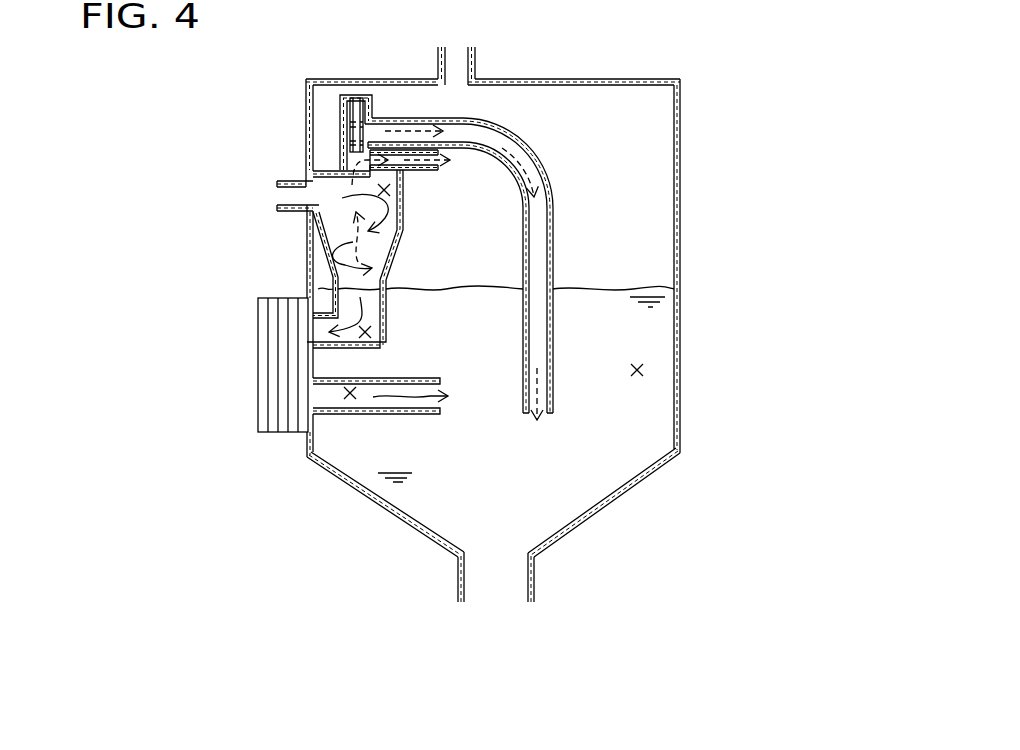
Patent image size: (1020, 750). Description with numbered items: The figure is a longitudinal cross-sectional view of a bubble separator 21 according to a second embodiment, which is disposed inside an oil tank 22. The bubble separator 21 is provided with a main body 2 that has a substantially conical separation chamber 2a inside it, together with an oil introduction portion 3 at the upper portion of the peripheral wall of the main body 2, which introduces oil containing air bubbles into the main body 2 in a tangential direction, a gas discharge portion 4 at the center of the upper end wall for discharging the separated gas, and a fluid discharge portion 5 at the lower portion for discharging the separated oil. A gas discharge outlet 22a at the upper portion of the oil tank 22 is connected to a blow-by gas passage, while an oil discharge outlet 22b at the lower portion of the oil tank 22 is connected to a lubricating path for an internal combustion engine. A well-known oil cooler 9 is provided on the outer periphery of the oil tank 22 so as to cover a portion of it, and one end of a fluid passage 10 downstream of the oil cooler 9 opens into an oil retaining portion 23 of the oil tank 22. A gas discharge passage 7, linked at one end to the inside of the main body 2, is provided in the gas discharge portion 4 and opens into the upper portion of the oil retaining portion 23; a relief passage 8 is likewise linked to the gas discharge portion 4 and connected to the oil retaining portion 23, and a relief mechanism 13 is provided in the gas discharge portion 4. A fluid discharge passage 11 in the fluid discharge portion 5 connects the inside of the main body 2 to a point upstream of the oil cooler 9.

The main body 2 is at (403, 182).
The separation chamber 2a is at (390, 192).
The oil introduction portion 3 is at (288, 184).
The gas discharge portion 4 is at (342, 148).
The fluid discharge portion 5 is at (389, 312).
The gas discharge passage 7 is at (404, 160).
The relief passage 8 is at (532, 249).
The oil cooler 9 is at (258, 352).
The fluid passage 10 is at (350, 400).
The fluid discharge passage 11 is at (371, 333).
The relief mechanism 13 is at (333, 125).
The bubble separator 21 is at (293, 252).
The oil tank 22 is at (682, 240).
The gas discharge outlet 22a is at (476, 66).
The oil discharge outlet 22b is at (533, 572).
The oil retaining portion 23 is at (642, 370).